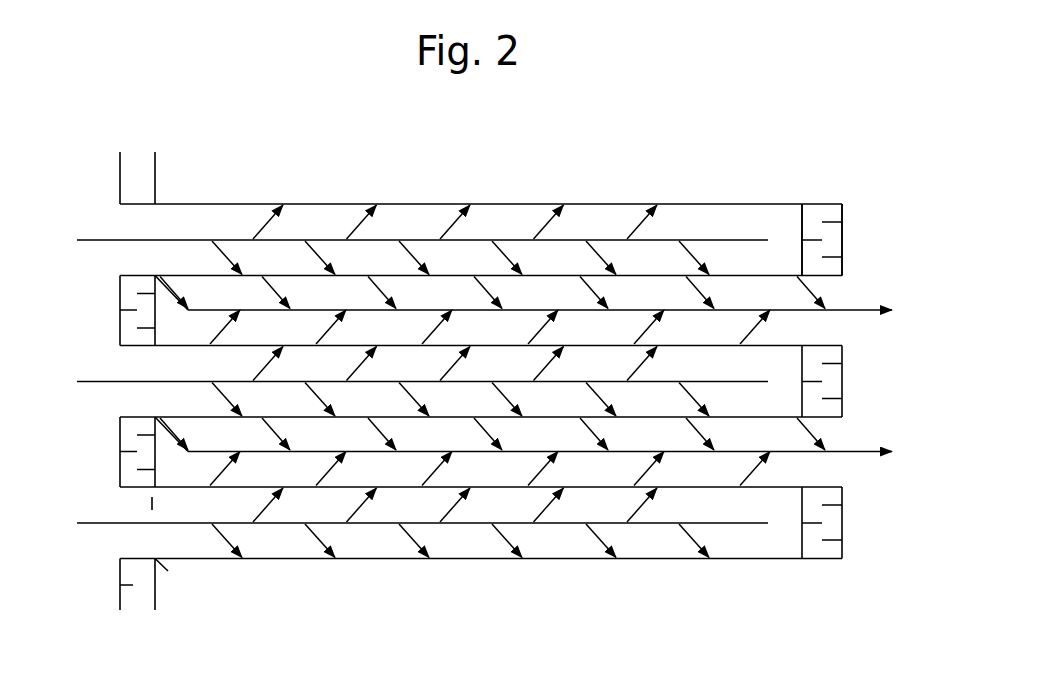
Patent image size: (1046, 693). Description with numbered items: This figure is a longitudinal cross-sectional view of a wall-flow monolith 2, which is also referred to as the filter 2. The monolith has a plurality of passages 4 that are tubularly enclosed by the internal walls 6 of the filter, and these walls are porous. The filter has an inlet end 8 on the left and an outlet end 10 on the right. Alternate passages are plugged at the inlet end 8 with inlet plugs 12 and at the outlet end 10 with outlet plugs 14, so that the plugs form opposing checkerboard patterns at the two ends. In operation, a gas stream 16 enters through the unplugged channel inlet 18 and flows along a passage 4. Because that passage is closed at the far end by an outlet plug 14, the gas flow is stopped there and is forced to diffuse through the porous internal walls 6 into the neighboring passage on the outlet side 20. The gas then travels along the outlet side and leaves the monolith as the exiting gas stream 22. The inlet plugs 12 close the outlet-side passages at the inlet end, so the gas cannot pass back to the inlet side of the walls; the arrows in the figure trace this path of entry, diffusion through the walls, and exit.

The wall-flow monolith 2 is at (434, 612).
The passage 4 is at (161, 277).
The internal wall 6 is at (452, 274).
The inlet end 8 is at (107, 152).
The outlet end 10 is at (853, 212).
The inlet plug 12 is at (122, 185).
The outlet plug 14 is at (832, 240).
The gas stream 16 is at (193, 238).
The unplugged channel inlet 18 is at (140, 233).
The outlet side 20 is at (813, 338).
The gas stream 22 is at (870, 309).